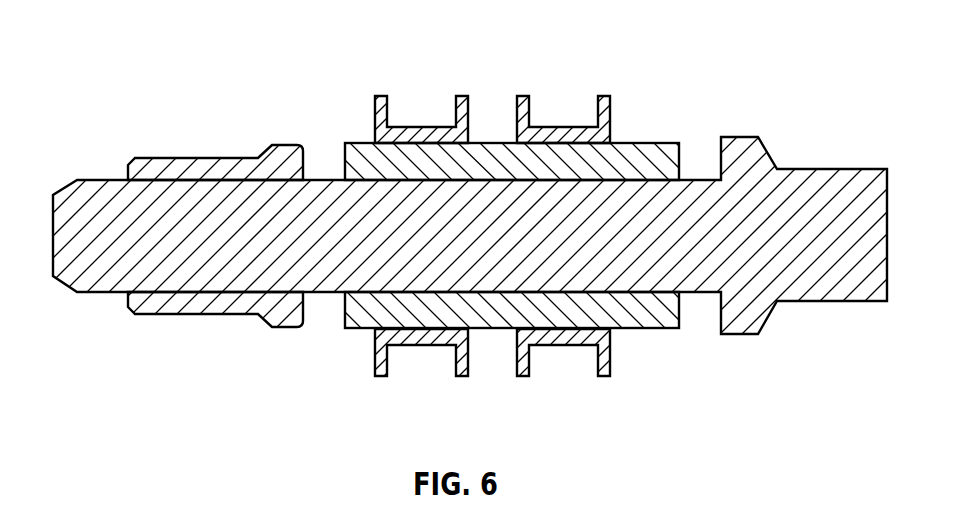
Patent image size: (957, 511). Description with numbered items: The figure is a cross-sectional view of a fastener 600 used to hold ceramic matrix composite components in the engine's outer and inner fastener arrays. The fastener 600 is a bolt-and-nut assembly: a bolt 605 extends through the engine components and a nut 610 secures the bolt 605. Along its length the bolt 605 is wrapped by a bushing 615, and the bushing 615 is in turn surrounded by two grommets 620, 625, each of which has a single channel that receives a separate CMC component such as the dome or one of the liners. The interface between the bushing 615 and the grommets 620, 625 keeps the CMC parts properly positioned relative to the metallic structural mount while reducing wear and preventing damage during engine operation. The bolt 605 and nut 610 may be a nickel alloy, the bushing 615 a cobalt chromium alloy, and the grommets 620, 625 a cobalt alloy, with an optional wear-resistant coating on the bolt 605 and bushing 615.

The fastener 600 is at (140, 54).
The bolt 605 is at (805, 245).
The nut 610 is at (185, 158).
The bushing 615 is at (662, 144).
The grommet 620 is at (383, 96).
The grommet 625 is at (603, 96).